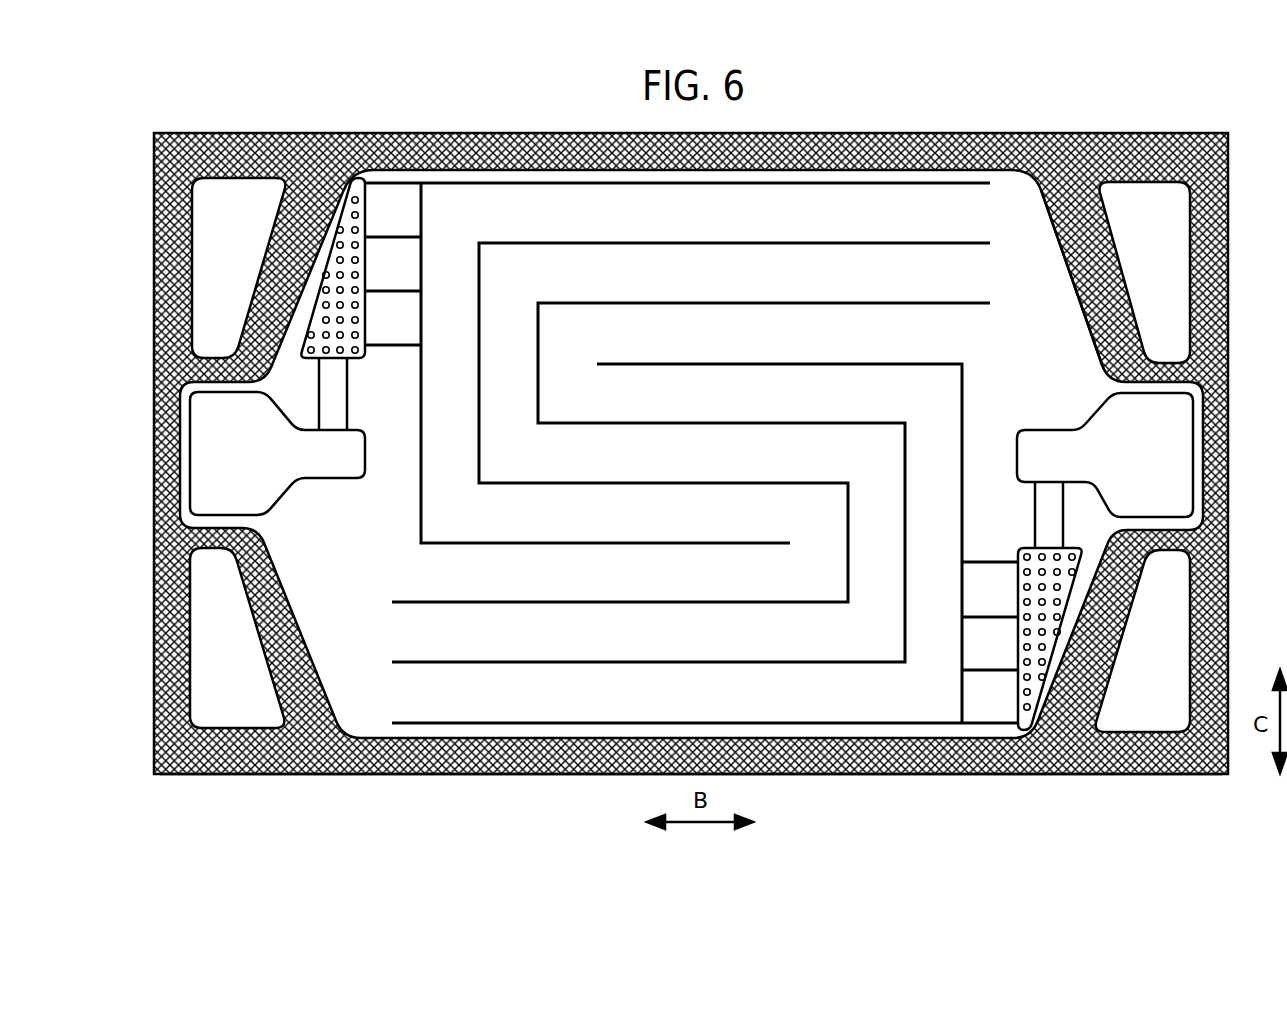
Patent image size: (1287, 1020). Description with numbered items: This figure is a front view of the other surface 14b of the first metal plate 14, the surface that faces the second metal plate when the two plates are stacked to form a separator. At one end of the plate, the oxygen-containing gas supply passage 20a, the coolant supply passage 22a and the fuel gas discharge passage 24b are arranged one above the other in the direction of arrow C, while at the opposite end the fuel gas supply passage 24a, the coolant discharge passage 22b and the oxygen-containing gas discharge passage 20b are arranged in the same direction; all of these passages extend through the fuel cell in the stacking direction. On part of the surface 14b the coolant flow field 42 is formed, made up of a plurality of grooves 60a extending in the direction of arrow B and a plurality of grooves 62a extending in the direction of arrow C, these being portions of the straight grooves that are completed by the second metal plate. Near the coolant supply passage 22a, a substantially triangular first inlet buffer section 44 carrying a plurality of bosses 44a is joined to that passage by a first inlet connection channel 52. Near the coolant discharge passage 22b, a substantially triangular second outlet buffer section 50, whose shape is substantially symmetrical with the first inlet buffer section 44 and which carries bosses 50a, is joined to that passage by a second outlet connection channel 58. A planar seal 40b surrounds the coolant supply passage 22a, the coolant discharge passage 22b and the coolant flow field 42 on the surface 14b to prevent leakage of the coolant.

The first metal plate 14 is at (392, 96).
The surface of the first metal plate 14b is at (1003, 776).
The oxygen-containing gas supply passage 20a is at (1145, 272).
The oxygen-containing gas discharge passage 20b is at (237, 638).
The coolant supply passage 22a is at (1105, 455).
The coolant discharge passage 22b is at (277, 453).
The fuel gas supply passage 24a is at (238, 268).
The fuel gas discharge passage 24b is at (1143, 641).
The planar seal 40b is at (1075, 297).
The coolant flow field 42 is at (969, 180).
The first inlet buffer section 44 is at (1013, 685).
The bosses 44a is at (1010, 593).
The second outlet buffer section 50 is at (367, 215).
The bosses 50a is at (366, 322).
The first inlet connection channel 52 is at (1066, 520).
The second outlet connection channel 58 is at (348, 392).
The grooves 60a is at (593, 720).
The grooves 62a is at (422, 510).